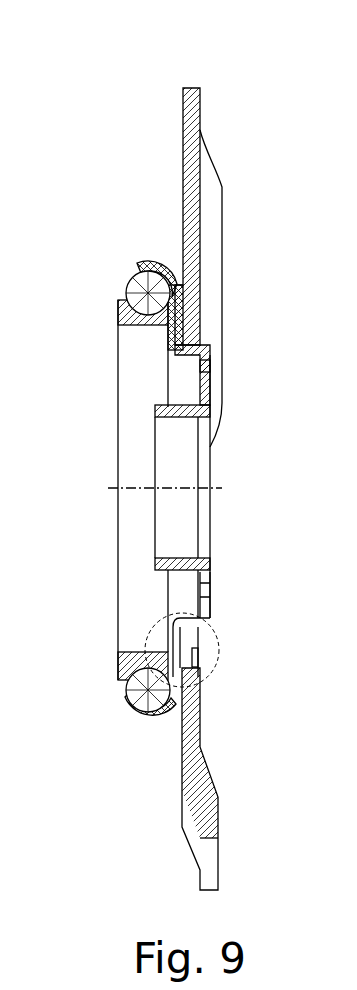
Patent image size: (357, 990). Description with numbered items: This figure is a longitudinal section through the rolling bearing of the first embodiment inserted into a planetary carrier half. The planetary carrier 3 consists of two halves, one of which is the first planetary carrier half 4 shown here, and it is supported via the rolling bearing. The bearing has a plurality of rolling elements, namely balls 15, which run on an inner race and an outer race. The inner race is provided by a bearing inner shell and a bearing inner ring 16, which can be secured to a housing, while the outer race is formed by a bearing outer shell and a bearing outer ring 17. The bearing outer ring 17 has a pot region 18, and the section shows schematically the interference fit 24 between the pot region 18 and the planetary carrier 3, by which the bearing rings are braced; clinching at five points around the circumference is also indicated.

The planetary carrier 3 is at (154, 489).
The first planetary carrier half 4 is at (183, 173).
The balls 15 is at (123, 693).
The bearing inner ring 16 is at (118, 306).
The bearing outer ring 17 is at (210, 403).
The pot region 18 is at (210, 357).
The interference fit 24 is at (205, 343).